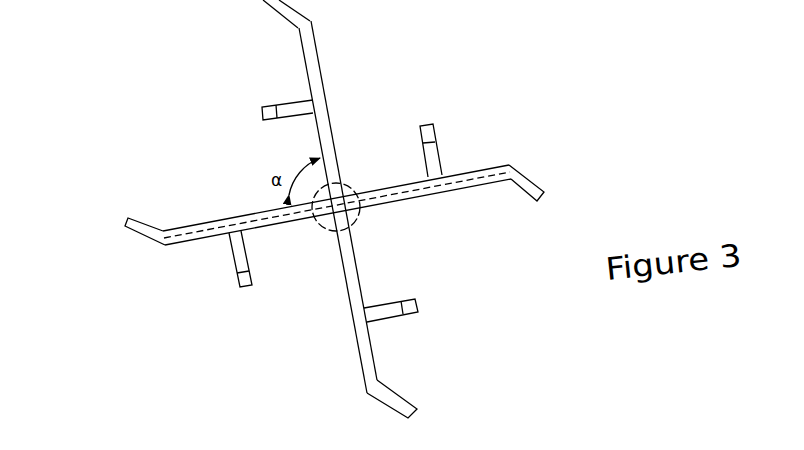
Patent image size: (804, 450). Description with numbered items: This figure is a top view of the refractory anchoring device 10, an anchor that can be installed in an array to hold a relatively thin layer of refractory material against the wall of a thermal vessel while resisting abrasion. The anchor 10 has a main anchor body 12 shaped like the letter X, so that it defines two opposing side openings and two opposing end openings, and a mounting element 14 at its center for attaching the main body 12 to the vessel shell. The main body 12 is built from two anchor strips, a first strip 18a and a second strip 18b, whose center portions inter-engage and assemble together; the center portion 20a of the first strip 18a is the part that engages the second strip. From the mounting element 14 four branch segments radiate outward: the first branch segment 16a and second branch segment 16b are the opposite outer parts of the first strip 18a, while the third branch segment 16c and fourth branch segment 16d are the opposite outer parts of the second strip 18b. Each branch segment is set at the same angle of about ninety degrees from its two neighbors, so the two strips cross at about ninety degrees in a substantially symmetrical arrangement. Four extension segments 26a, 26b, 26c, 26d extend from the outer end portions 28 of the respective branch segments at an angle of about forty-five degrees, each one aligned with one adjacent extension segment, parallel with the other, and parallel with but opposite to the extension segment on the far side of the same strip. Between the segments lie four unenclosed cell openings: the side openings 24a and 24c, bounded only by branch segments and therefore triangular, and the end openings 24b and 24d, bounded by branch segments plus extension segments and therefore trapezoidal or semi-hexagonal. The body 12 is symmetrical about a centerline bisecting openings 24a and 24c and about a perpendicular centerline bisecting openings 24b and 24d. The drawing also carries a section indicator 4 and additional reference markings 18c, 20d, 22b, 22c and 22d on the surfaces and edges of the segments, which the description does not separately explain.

The refractory anchoring device 10 is at (537, 293).
The main anchor body 12 is at (361, 277).
The mounting element 14 is at (364, 210).
The first branch segment 16a is at (319, 50).
The second branch segment 16b is at (193, 252).
The third branch segment 16c is at (374, 349).
The fourth branch segment 16d is at (487, 187).
The first anchor strip 18a is at (330, 78).
The second anchor strip 18b is at (196, 223).
The second surface of bottom arm 18c is at (356, 369).
The center portion 20a is at (327, 226).
The inner surface of right arm 20d is at (550, 177).
The edge of left arm 22b is at (171, 256).
The edge of bottom arm 22c is at (363, 384).
The edge of right arm 22d is at (505, 160).
The side cell opening 24a is at (425, 114).
The end cell opening 24b is at (262, 176).
The side cell opening 24c is at (293, 334).
The end cell opening 24d is at (489, 311).
The extension segment 26a is at (274, 15).
The extension segment 26b is at (129, 212).
The extension segment 26c is at (420, 411).
The extension segment 26d is at (553, 201).
The outer end portion 28 is at (579, 178).
The section line 4- 4 is at (160, 246).